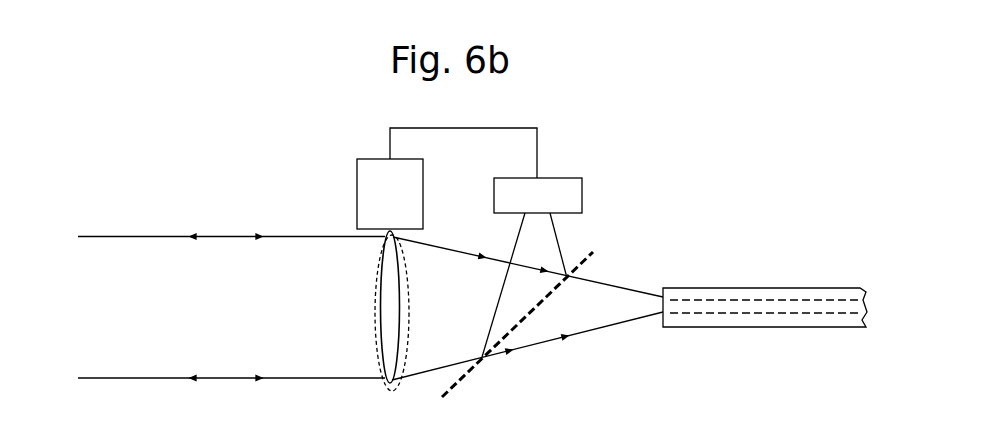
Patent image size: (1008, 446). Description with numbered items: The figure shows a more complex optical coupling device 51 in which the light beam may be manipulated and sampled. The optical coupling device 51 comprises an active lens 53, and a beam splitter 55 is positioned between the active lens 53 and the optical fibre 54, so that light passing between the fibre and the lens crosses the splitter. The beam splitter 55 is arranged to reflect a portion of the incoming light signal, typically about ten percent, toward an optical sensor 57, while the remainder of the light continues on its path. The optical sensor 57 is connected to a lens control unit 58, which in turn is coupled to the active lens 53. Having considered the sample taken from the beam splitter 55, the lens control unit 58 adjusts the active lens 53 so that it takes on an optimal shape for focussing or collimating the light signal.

The optical coupling device 51 is at (657, 206).
The active lens 53 is at (392, 298).
The optical fibre 54 is at (755, 320).
The beam splitter 55 is at (476, 365).
The optical sensor 57 is at (560, 192).
The lens control unit 58 is at (377, 192).